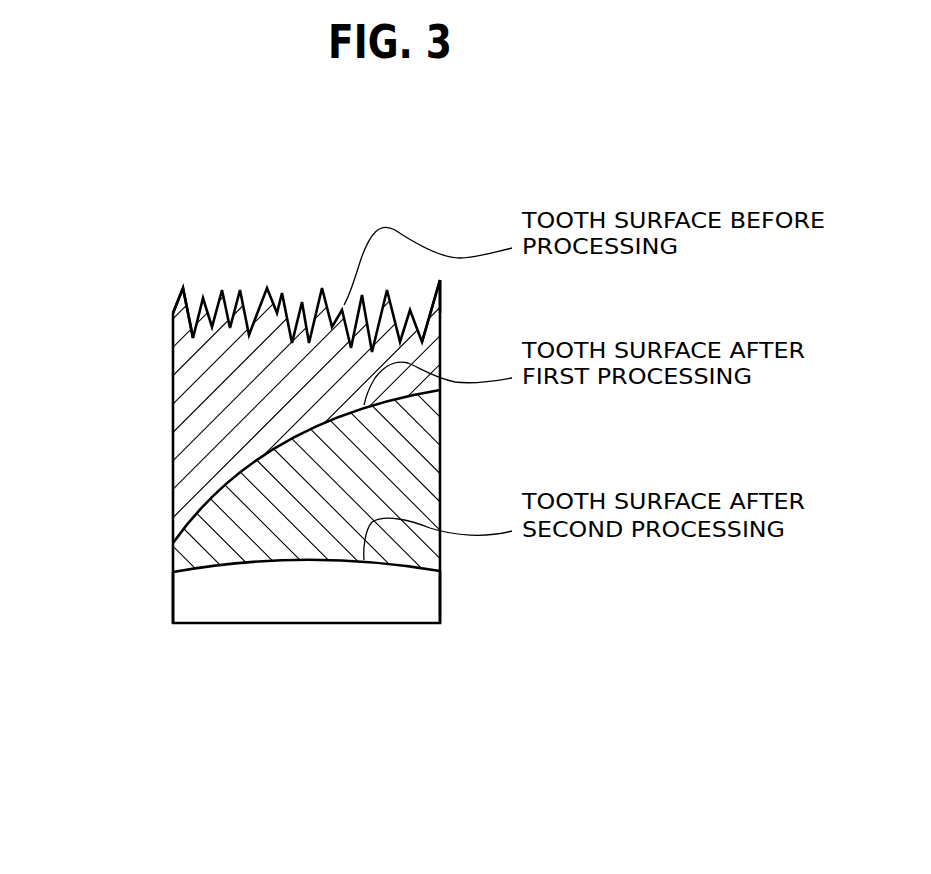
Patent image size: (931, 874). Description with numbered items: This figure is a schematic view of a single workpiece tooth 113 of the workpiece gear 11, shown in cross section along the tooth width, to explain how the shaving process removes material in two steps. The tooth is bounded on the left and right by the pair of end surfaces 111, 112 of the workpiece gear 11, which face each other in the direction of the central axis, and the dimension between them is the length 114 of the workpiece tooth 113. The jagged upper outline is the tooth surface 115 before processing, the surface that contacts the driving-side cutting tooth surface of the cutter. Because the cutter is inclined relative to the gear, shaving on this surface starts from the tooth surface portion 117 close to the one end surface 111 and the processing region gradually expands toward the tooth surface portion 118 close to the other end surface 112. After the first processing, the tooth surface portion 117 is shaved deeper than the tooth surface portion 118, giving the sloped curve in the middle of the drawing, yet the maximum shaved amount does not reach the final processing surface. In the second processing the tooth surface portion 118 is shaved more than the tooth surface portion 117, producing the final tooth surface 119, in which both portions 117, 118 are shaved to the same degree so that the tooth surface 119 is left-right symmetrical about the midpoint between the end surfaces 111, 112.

The workpiece tooth 113 is at (123, 243).
The tooth surface 115 is at (264, 288).
The tooth surface portion 117 is at (177, 300).
The tooth surface portion 118 is at (445, 302).
The end surface 111 is at (173, 446).
The end surface 112 is at (441, 447).
The workpiece gear 11 is at (442, 595).
The tooth surface after the second processing 119 is at (407, 567).
The length of the workpiece tooth 114 is at (441, 628).